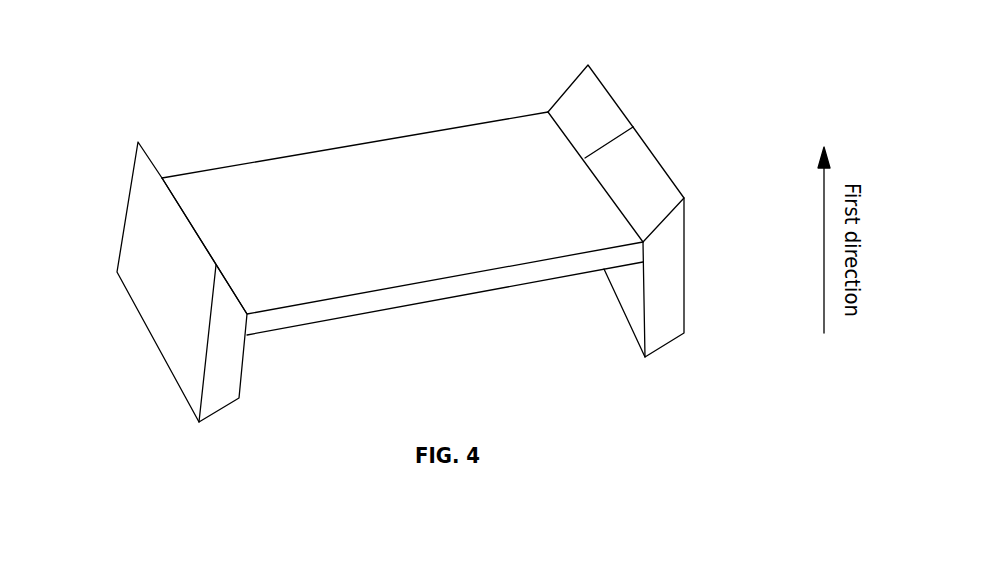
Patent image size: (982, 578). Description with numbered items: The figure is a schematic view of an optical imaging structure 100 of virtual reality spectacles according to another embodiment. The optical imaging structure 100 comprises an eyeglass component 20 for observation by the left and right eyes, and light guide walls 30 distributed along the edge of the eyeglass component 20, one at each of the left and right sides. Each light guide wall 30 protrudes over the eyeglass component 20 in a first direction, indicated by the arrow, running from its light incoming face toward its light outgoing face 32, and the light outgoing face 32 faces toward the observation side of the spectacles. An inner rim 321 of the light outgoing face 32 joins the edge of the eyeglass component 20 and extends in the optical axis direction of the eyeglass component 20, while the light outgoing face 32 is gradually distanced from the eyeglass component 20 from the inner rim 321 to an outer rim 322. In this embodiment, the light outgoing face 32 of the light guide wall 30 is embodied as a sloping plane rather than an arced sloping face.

The optical imaging structure 100 is at (130, 74).
The eyeglass component 20 is at (413, 294).
The light guide wall 30 is at (178, 308).
The light outgoing face 32 is at (640, 140).
The inner rim 321 is at (633, 127).
The outer rim 322 is at (610, 92).